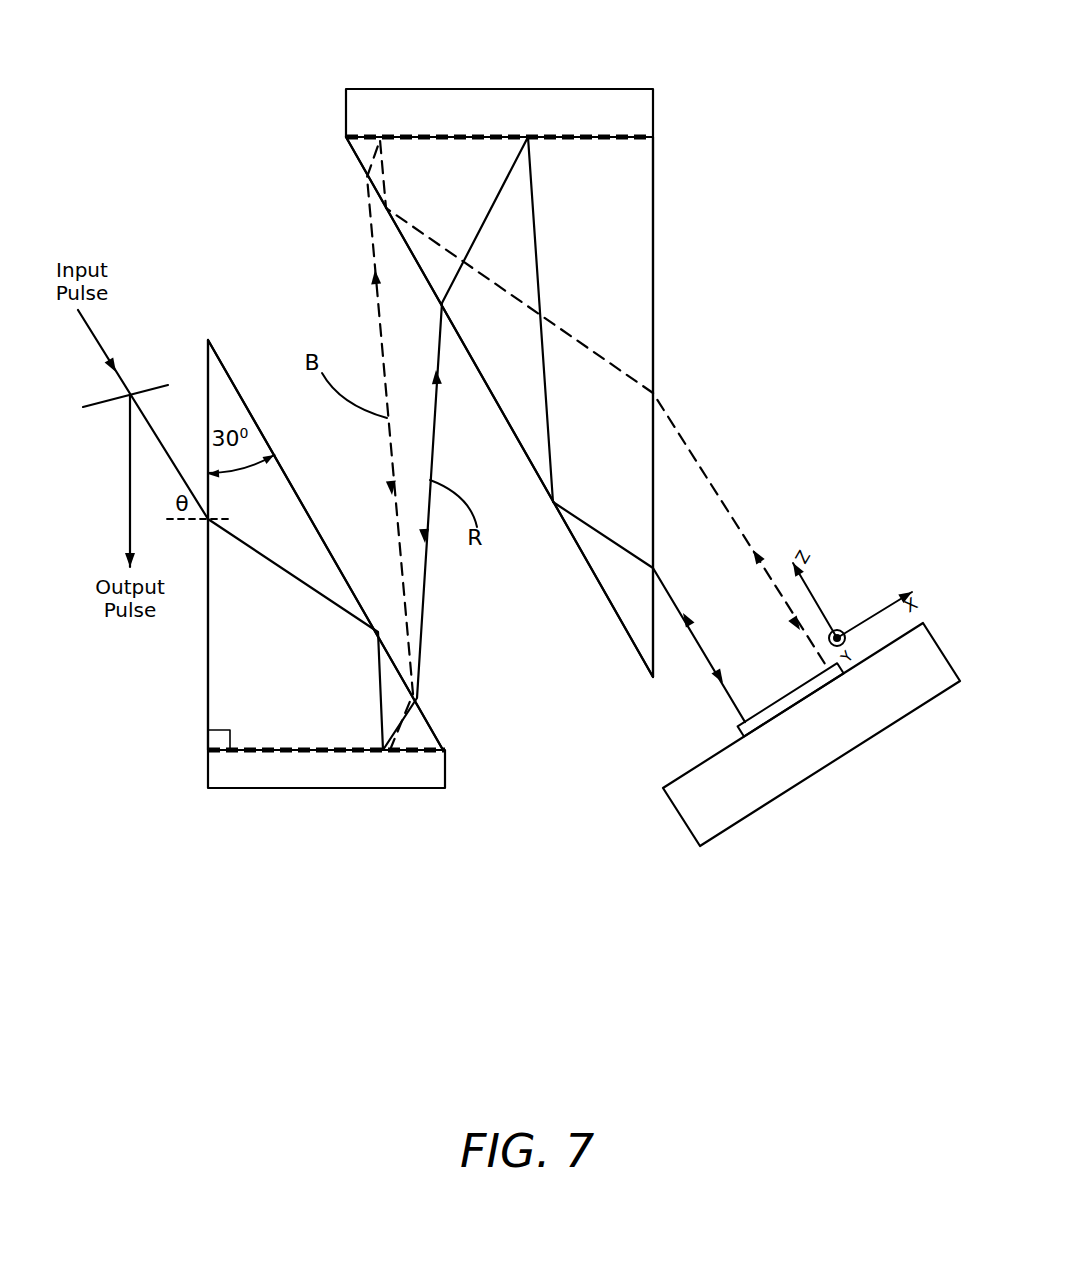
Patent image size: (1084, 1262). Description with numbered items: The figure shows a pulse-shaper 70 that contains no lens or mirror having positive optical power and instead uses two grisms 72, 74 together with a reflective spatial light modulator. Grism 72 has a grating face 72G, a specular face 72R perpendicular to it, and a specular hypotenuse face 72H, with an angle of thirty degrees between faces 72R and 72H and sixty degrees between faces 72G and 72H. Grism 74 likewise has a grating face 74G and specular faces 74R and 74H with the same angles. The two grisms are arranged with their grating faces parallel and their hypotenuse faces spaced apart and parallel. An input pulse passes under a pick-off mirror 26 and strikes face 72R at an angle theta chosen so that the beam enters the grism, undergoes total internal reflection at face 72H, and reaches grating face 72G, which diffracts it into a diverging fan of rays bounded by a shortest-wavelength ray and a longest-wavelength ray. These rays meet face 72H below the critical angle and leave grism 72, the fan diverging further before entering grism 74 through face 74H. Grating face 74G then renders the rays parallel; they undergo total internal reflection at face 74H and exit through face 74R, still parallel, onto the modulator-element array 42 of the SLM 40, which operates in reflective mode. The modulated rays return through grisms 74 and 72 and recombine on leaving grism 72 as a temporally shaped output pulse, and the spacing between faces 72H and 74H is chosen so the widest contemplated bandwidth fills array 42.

The grism 74 is at (447, 87).
The grating face 74G is at (560, 137).
The specular face 74R is at (653, 280).
The specular hypotenuse face 74H is at (590, 575).
The grism 72 is at (323, 789).
The grating face 72G is at (256, 755).
The specular face 72R is at (208, 657).
The specular hypotenuse face 72H is at (297, 490).
The pick-off mirror 26 is at (93, 408).
The SLM 40 is at (779, 797).
The modulator-element array 42 is at (742, 728).
The pulse-shaper 70 is at (670, 1020).